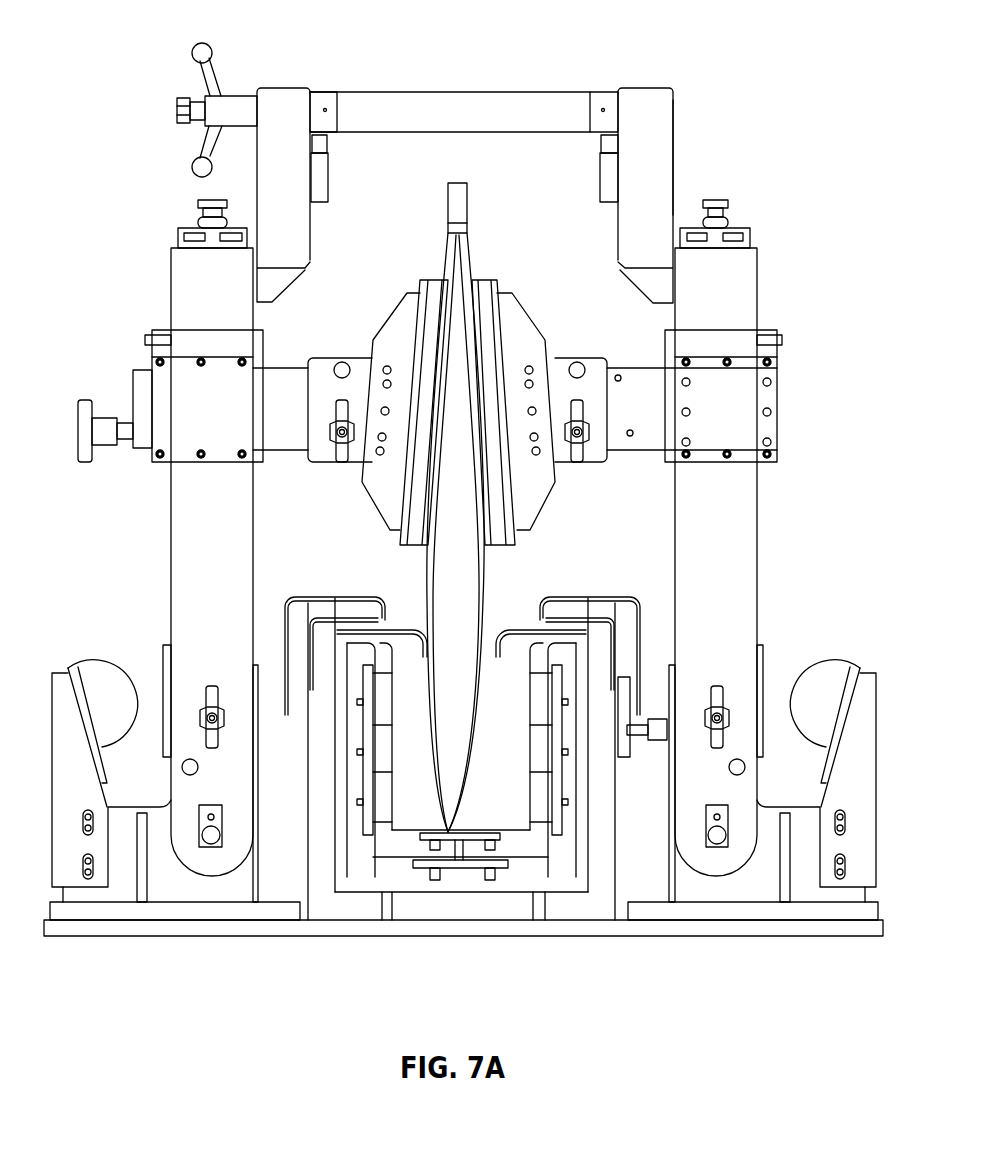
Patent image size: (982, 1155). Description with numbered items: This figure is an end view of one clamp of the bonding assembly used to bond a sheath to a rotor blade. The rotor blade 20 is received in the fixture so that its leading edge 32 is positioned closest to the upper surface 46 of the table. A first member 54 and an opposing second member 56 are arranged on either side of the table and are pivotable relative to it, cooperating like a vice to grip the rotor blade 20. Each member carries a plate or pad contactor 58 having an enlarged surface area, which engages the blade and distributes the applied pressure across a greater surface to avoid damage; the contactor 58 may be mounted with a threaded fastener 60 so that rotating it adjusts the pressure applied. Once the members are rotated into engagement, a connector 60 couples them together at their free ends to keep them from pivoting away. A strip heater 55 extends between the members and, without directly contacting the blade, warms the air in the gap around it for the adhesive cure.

The rotor blade assembly 20 is at (448, 835).
The leading edge 32 is at (455, 832).
The upper surface 46 is at (310, 915).
The first member 54 is at (171, 527).
The strip heater 55 is at (368, 762).
The second member 56 is at (757, 527).
The contactor 58 is at (418, 493).
The connector 60 is at (470, 91).